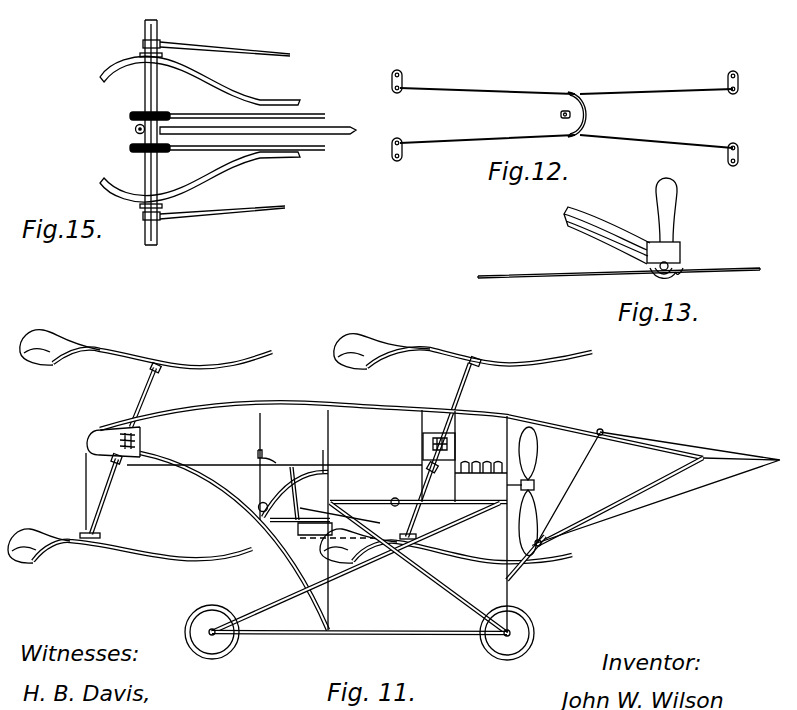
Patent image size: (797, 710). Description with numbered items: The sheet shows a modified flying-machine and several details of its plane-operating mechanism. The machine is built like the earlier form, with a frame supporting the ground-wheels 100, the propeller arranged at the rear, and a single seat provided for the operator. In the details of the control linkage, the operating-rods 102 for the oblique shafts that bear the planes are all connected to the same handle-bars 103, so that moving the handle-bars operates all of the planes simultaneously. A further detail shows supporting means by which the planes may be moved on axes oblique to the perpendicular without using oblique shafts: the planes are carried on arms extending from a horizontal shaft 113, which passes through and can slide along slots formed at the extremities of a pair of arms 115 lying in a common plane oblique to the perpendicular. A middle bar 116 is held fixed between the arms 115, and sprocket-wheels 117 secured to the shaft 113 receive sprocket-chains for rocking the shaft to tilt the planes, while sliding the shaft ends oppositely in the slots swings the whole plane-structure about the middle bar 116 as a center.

In FIG. 11, the ground-wheels 100 is at (233, 611).
In FIG. 12, the operating-rods 102 is at (512, 90).
In FIG. 12, the handle-bars 103 is at (571, 92).
In FIG. 13, the handle-bars 103 is at (618, 229).
In FIG. 15, the horizontal shaft 113 is at (143, 89).
In FIG. 15, the arms 115 is at (227, 77).
In FIG. 15, the middle bar 116 is at (136, 132).
In FIG. 15, the sprocket-wheels 117 is at (160, 114).